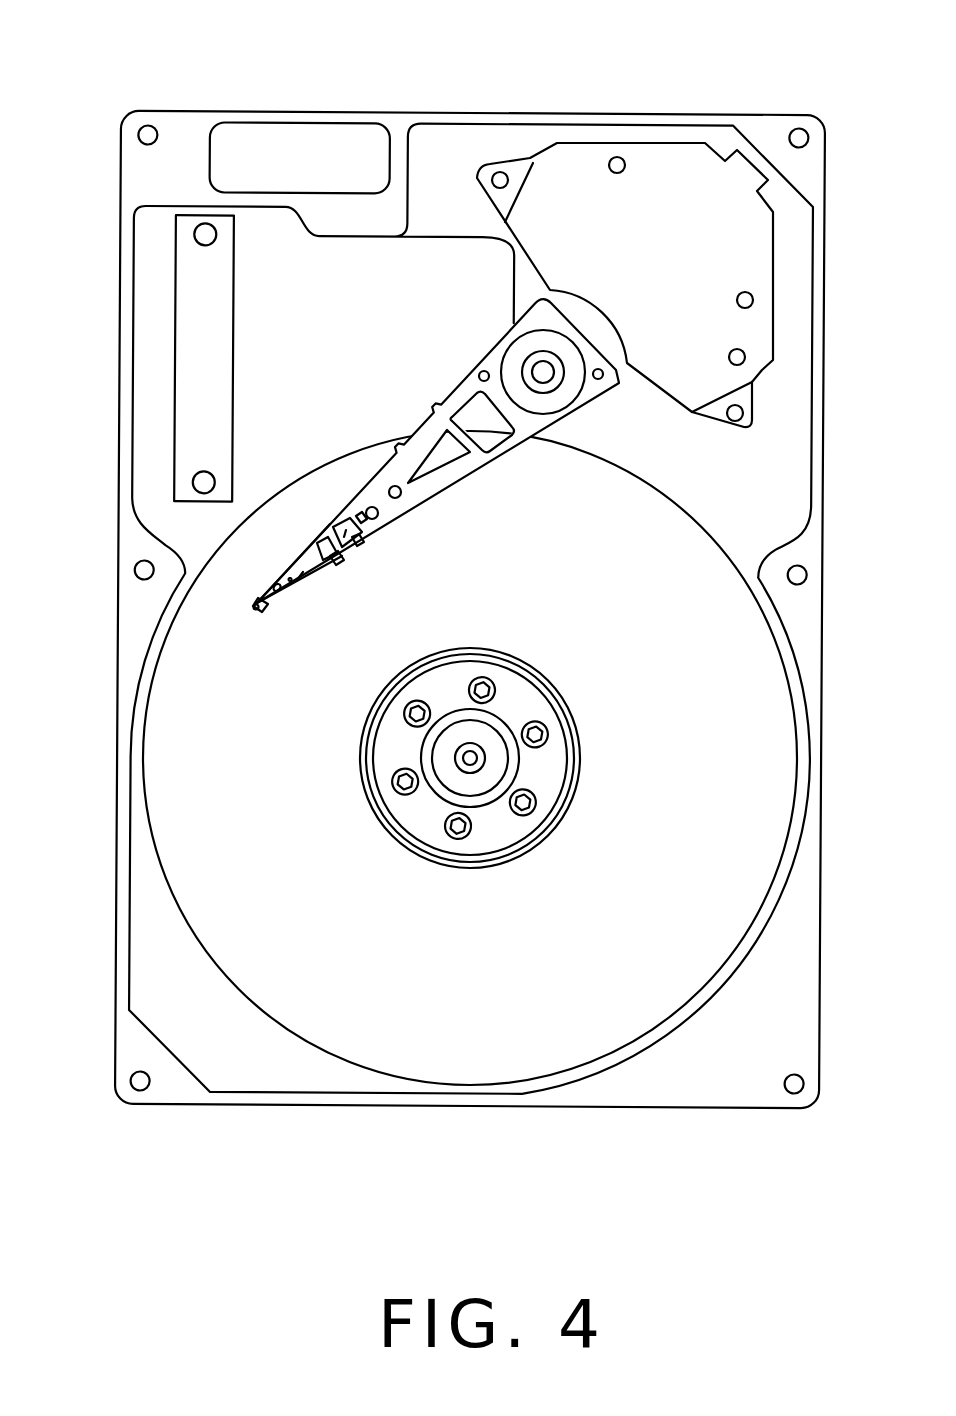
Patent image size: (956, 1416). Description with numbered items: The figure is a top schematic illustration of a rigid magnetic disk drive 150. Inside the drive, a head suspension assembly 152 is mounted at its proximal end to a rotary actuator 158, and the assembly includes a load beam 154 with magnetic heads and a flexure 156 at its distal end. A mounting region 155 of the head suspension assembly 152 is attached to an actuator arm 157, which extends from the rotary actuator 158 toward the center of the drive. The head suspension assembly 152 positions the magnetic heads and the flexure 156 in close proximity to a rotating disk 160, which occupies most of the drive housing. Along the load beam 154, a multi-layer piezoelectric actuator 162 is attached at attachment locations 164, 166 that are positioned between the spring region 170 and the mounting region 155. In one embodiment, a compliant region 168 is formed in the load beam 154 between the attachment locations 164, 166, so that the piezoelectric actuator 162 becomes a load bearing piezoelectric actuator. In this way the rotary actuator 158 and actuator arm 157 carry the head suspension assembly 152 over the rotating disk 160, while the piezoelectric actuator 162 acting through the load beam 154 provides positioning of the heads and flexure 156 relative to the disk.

The rigid magnetic disk drive 150 is at (628, 80).
The head suspension assembly 152 is at (338, 490).
The load beam 154 is at (303, 573).
The mounting region 155 is at (383, 520).
The flexure 156 is at (253, 605).
The actuator arm 157 is at (470, 390).
The rotary actuator 158 is at (568, 387).
The rotating disk 160 is at (580, 1005).
The multi-layer piezoelectric actuator 162 is at (333, 530).
The attachment location 164 is at (362, 523).
The attachment location 166 is at (327, 548).
The compliant region 168 is at (357, 542).
The spring region 170 is at (338, 562).